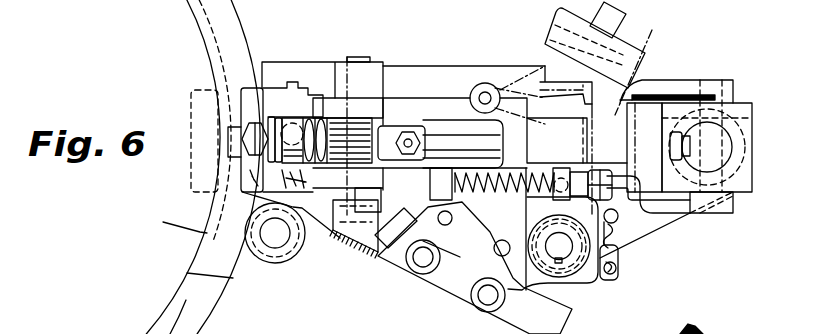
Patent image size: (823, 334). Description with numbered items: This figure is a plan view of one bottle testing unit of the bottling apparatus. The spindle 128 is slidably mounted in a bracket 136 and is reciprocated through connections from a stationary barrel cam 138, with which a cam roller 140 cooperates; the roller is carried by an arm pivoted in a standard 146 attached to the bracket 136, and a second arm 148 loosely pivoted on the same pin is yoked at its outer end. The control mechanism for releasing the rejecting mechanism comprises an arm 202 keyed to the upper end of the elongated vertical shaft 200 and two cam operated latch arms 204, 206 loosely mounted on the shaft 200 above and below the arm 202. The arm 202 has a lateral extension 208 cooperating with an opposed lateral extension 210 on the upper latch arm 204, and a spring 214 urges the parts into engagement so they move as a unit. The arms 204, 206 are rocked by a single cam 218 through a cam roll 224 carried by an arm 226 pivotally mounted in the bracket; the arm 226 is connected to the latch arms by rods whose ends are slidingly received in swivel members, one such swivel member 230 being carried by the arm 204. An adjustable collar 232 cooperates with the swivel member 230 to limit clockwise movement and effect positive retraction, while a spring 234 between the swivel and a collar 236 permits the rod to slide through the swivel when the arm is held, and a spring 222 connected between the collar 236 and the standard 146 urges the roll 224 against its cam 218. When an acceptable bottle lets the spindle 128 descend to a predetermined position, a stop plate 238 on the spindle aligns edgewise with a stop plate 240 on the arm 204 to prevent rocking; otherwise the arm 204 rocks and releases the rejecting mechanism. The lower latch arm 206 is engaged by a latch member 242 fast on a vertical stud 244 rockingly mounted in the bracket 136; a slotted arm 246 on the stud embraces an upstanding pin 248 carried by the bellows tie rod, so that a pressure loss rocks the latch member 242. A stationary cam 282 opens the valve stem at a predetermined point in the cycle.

The spindle 128 is at (732, 147).
The bracket 136 is at (505, 65).
The barrel cam 138 is at (234, 22).
The cam roller 140 is at (197, 90).
The standard 146 is at (378, 72).
The second arm 148 is at (672, 212).
The elongated vertical shaft 200 is at (550, 259).
The arm 202 is at (563, 268).
The upper latch arm 204 is at (527, 207).
The lower latch arm 206 is at (644, 147).
The lateral extension 208 is at (590, 280).
The lateral extension 210 is at (620, 250).
The spring 214 is at (618, 266).
The cam 218 is at (217, 303).
The spring 222 is at (330, 155).
The cam roll 224 is at (283, 262).
The cam roll arm 226 is at (306, 224).
The swivel member 230 is at (545, 204).
The adjustable collar 232 is at (585, 197).
The spring 234 is at (470, 168).
The collar 236 is at (450, 168).
The stop plate 238 is at (648, 105).
The stop plate 240 is at (577, 166).
The latch member 242 is at (595, 73).
The vertical stud 244 is at (483, 88).
The slotted arm 246 is at (543, 93).
The upstanding pin 248 is at (455, 144).
The stationary cam 282 is at (233, 278).